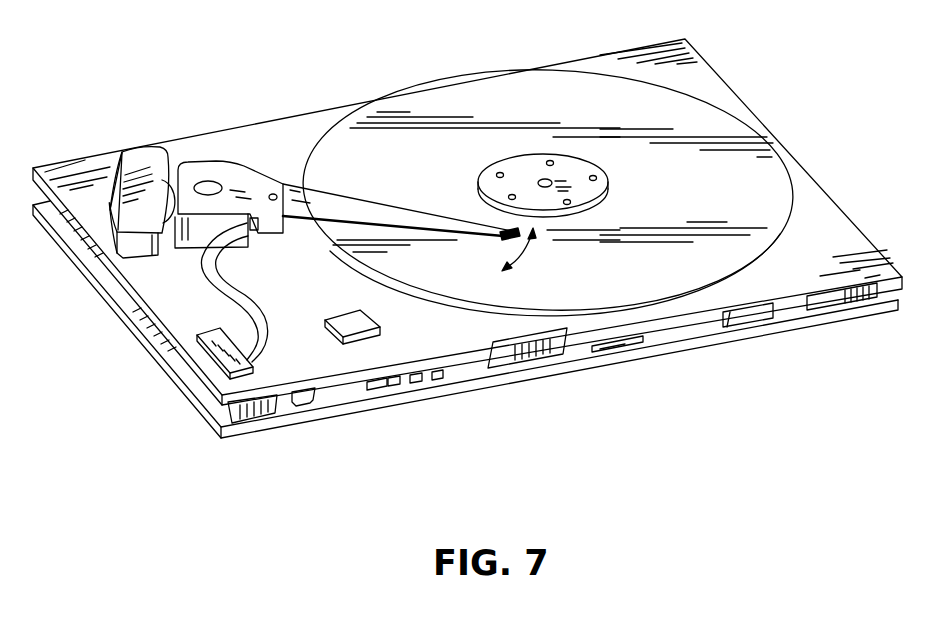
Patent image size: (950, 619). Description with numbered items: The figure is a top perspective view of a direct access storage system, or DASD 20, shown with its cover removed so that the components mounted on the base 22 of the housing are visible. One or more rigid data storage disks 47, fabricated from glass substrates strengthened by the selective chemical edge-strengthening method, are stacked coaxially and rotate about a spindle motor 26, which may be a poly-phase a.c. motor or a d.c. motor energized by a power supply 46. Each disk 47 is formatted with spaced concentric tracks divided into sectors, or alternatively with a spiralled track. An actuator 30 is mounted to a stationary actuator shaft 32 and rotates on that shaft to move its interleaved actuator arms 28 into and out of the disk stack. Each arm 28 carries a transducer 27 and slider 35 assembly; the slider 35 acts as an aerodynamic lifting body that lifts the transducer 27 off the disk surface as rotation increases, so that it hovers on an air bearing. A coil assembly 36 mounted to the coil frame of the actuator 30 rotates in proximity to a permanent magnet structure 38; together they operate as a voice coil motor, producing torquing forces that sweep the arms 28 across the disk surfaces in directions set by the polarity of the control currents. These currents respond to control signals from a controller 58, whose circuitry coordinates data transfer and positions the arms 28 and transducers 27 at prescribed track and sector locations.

The DASD 20 is at (637, 403).
The base 22 is at (421, 401).
The spindle motor 26 is at (598, 172).
The transducer 27 is at (505, 245).
The actuator arm 28 is at (384, 201).
The actuator 30 is at (261, 173).
The actuator shaft 32 is at (208, 181).
The slider 35 is at (505, 232).
The coil assembly 36 is at (167, 238).
The permanent magnet structure 38 is at (128, 162).
The power supply 46 is at (363, 320).
The data storage disk 47 is at (561, 115).
The controller 58 is at (254, 356).